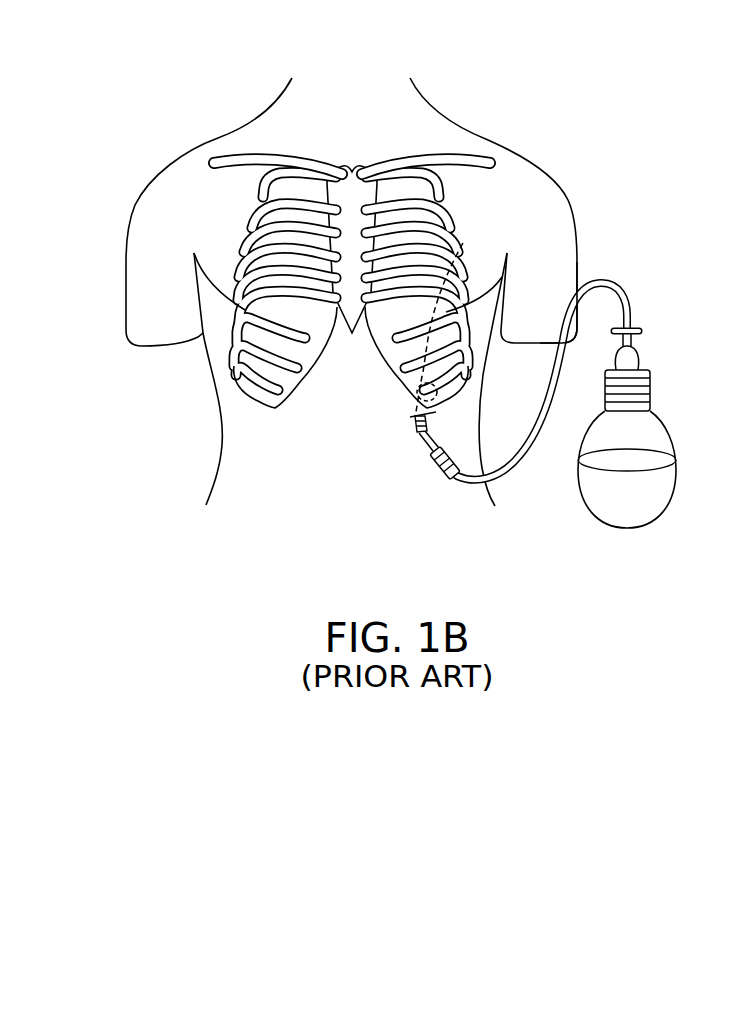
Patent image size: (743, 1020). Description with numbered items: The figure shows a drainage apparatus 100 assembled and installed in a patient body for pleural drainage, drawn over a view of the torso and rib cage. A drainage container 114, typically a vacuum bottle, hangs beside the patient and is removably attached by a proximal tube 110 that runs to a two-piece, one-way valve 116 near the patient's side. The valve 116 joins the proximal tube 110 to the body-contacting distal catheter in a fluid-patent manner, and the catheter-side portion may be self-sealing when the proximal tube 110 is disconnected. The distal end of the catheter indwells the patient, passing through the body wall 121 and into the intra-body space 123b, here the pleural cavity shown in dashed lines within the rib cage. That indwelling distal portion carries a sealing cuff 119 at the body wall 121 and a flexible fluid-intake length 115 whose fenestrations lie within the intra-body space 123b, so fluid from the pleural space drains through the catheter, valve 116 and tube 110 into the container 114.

The drainage apparatus 100 is at (566, 419).
The proximal tube 110 is at (598, 282).
The drainage container 114 is at (653, 502).
The flexible fluid-intake length 115 is at (420, 393).
The one-way valve 116 is at (438, 460).
The sealing cuff 119 is at (417, 432).
The body wall 121 is at (416, 417).
The intra-body space 123b is at (464, 242).